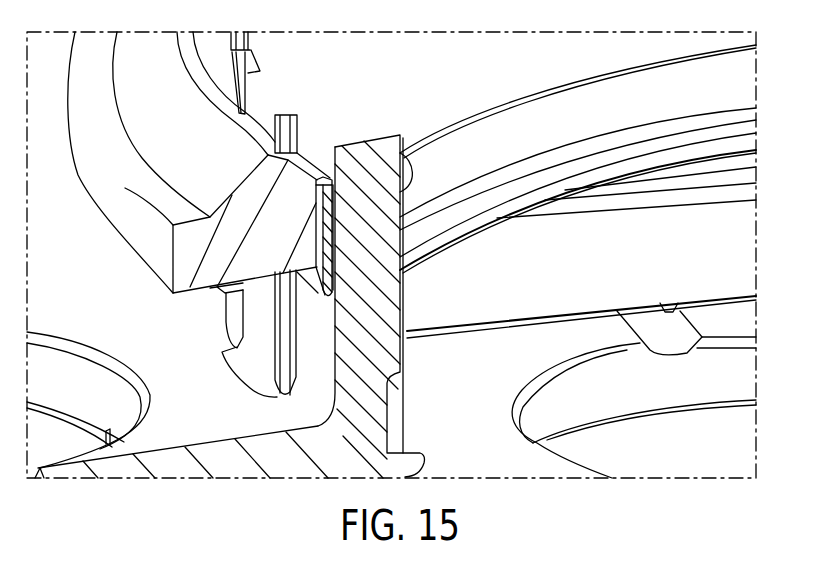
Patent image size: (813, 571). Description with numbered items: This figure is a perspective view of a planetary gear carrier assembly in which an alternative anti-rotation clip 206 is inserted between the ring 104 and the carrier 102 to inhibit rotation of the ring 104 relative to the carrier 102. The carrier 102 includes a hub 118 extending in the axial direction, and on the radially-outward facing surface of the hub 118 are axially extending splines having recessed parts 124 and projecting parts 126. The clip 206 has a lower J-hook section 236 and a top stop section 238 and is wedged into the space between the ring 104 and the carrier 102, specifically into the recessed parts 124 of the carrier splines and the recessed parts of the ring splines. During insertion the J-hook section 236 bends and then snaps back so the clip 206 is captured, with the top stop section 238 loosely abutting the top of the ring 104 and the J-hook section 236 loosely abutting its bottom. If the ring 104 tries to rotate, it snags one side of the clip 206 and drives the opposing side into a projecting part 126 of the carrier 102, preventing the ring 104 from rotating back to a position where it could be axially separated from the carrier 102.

The carrier 102 is at (727, 257).
The ring 104 is at (108, 202).
The hub 118 is at (387, 374).
The recessed parts 124 is at (317, 349).
The projecting parts 126 is at (262, 346).
The clip 206 is at (399, 203).
The J-hook section 236 is at (320, 289).
The top stop section 238 is at (318, 173).